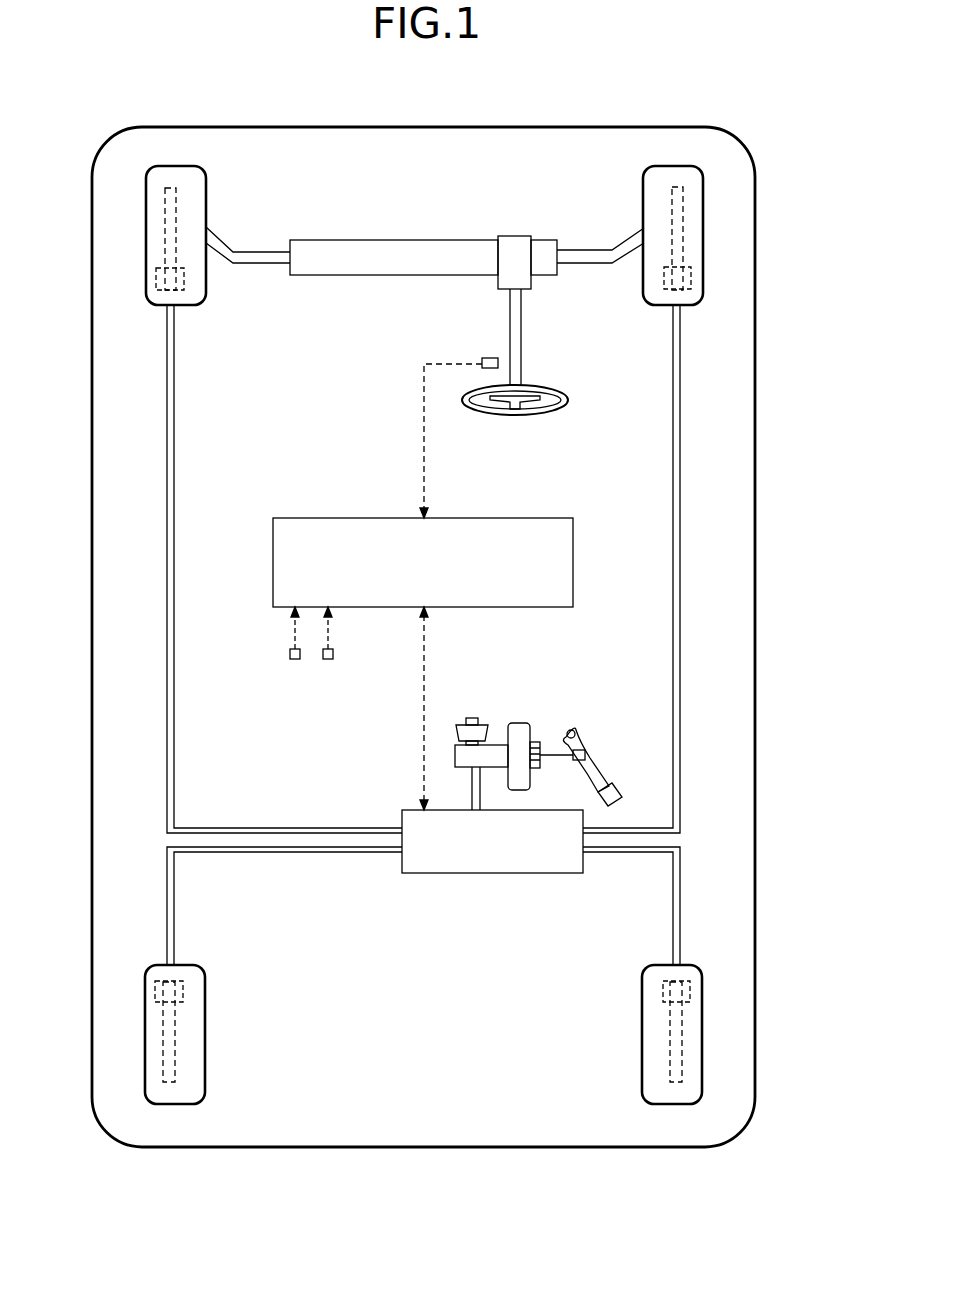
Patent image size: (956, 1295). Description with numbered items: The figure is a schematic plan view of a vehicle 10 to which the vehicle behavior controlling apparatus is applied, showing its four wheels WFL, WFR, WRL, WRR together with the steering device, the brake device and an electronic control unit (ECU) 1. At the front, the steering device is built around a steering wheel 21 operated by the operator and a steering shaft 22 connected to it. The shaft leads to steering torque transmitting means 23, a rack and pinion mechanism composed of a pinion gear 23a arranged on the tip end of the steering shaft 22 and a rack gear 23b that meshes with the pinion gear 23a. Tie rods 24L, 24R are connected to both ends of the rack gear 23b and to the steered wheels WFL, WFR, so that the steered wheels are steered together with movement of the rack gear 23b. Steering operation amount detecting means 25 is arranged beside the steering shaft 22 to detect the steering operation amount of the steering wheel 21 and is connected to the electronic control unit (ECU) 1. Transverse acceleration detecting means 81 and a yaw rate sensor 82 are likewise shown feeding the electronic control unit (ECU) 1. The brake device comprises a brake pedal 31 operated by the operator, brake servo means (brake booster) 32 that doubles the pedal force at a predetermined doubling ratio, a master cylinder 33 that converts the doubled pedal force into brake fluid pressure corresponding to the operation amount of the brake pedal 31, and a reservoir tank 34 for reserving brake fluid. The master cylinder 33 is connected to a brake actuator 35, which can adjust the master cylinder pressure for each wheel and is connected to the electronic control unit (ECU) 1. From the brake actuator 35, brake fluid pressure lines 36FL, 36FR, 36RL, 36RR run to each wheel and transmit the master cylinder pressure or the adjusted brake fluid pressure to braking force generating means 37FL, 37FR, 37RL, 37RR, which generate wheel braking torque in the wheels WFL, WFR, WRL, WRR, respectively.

The electronic control unit (ECU) 1 is at (487, 516).
The vehicle 10 is at (610, 127).
The steering wheel 21 is at (527, 418).
The steering shaft 22 is at (523, 367).
The steering torque transmitting means 23 is at (423, 220).
The pinion gear 23a is at (515, 236).
The rack gear 23b is at (418, 240).
The tie rod 24L is at (232, 247).
The tie rod 24R is at (618, 245).
The steering operation amount detecting means 25 is at (490, 358).
The brake pedal 31 is at (600, 768).
The brake servo means (brake booster) 32 is at (522, 723).
The master cylinder 33 is at (496, 745).
The reservoir tank 34 is at (470, 718).
The brake actuator 35 is at (490, 875).
The brake fluid pressure line 36FL is at (166, 790).
The brake fluid pressure line 36FR is at (682, 790).
The brake fluid pressure line 36RL is at (166, 865).
The brake fluid pressure line 36RR is at (682, 860).
The braking force generating means 37FL is at (156, 278).
The braking force generating means 37FR is at (691, 277).
The braking force generating means 37RL is at (155, 992).
The braking force generating means 37RR is at (690, 992).
The transverse acceleration detecting means 81 is at (293, 662).
The yaw rate sensor 82 is at (329, 662).
The wheel WFL is at (206, 205).
The wheel WFR is at (642, 205).
The wheel WRL is at (206, 1055).
The wheel WRR is at (641, 1055).